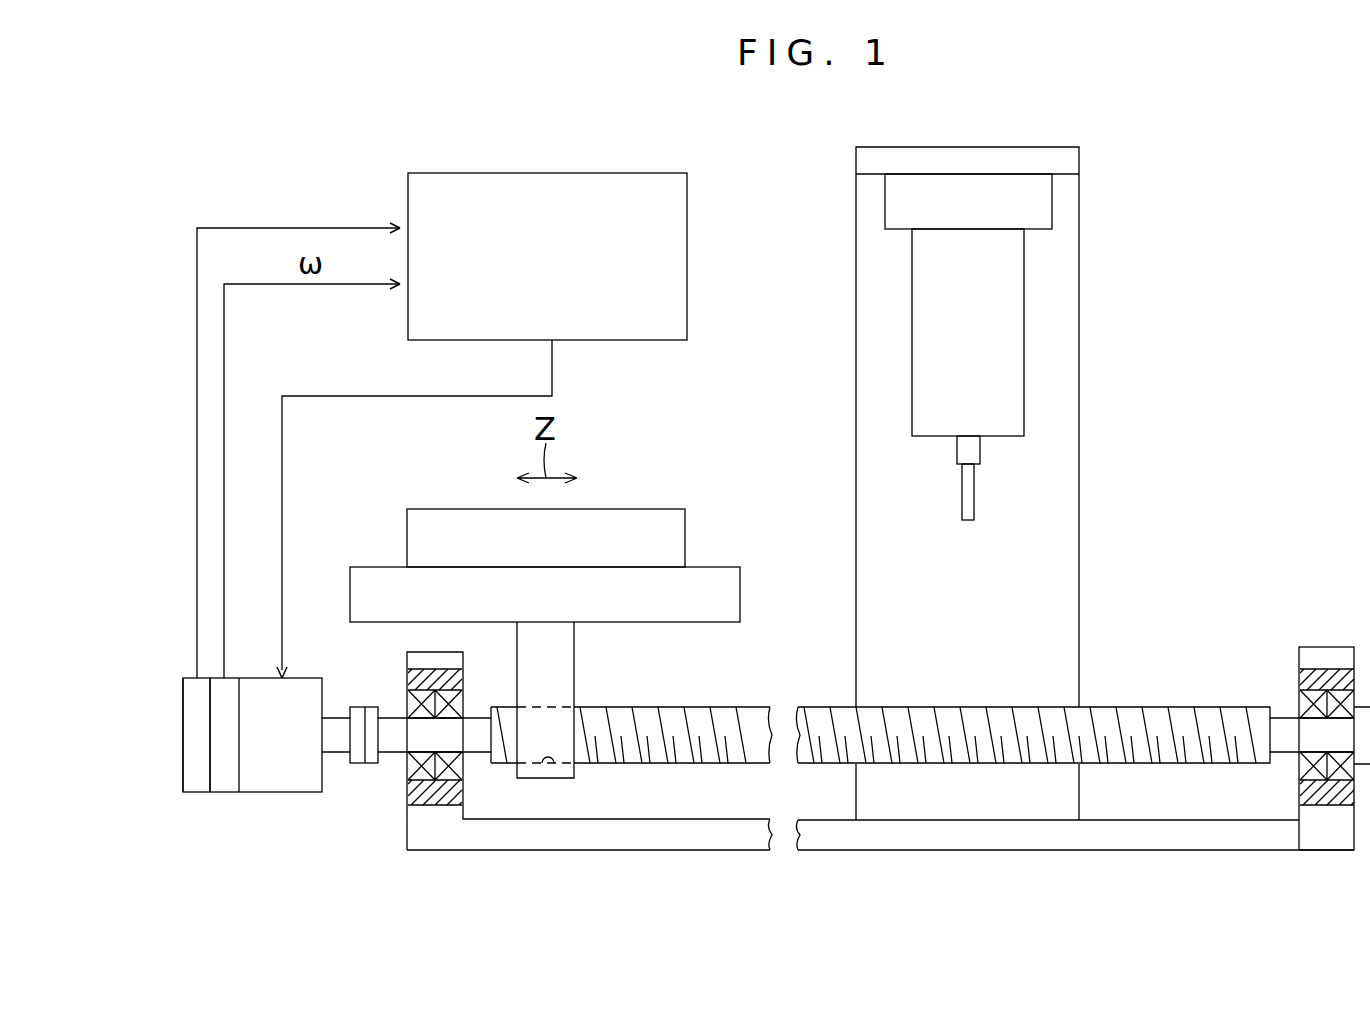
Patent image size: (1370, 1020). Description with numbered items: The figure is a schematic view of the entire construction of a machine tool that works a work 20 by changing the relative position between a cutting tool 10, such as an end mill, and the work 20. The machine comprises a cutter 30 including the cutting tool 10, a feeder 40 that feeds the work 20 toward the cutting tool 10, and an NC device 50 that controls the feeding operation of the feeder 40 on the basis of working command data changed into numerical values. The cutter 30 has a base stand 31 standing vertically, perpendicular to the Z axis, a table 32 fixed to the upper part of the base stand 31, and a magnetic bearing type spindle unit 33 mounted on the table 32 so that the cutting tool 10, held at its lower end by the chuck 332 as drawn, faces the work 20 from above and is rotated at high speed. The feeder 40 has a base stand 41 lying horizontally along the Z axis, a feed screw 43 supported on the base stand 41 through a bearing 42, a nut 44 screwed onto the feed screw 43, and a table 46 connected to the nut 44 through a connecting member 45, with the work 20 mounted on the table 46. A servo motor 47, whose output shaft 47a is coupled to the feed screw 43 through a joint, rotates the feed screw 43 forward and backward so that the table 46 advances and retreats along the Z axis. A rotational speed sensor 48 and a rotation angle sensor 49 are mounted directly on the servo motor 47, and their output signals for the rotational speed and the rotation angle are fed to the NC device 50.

The cutting tool 10 is at (970, 494).
The work 20 is at (665, 520).
The cutter 30 is at (1067, 462).
The base stand 31 is at (1062, 347).
The table 32 is at (995, 183).
The magnetic bearing type spindle unit 33 is at (1005, 305).
The chuck 332 is at (968, 450).
The feeder 40 is at (1277, 625).
The base stand 41 is at (945, 835).
The bearing 42 is at (450, 775).
The feed screw 43 is at (680, 755).
The nut 44 is at (548, 770).
The connecting member 45 is at (557, 674).
The table 46 is at (715, 596).
The servo motor 47 is at (285, 778).
The output shaft 47a is at (352, 740).
The rotational speed sensor 48 is at (228, 780).
The rotation angle sensor 49 is at (195, 780).
The NC device 50 is at (585, 188).